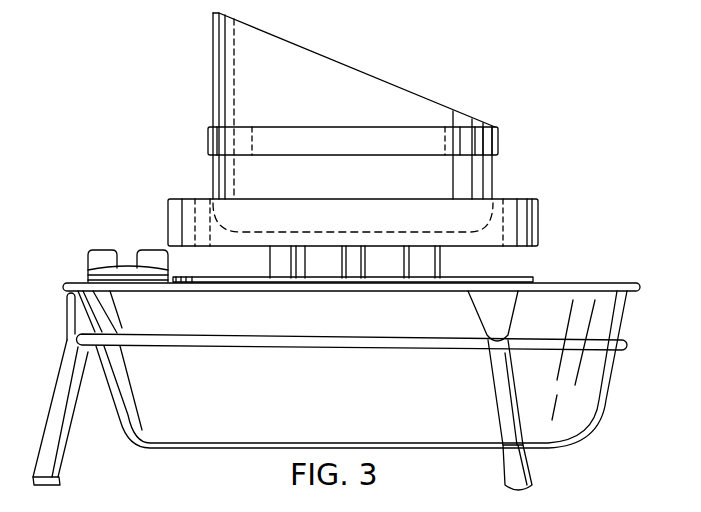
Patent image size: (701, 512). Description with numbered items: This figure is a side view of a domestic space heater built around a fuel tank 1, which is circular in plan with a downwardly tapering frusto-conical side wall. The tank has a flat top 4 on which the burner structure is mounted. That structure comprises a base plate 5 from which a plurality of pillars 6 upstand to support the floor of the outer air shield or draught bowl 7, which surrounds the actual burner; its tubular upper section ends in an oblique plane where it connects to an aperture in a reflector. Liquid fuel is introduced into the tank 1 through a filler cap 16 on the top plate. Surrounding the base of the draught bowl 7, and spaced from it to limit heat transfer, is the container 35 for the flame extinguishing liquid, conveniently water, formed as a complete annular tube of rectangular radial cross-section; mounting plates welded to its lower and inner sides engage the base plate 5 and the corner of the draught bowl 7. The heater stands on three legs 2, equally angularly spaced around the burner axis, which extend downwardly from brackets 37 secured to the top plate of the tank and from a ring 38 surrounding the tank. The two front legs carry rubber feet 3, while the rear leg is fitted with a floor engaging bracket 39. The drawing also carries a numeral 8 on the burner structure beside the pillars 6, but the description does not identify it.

The fuel tank 1 is at (147, 440).
The legs 2 is at (62, 421).
The rubber feet 3 is at (522, 462).
The flat top 4 is at (229, 286).
The base plate 5 is at (177, 281).
The pillars 6 is at (303, 263).
The outer air shield or draught bowl 7 is at (228, 175).
The support post 8 is at (273, 257).
The filler cap 16 is at (131, 267).
The container 35 is at (183, 214).
The brackets 37 is at (493, 303).
The ring 38 is at (262, 345).
The floor engaging bracket 39 is at (55, 481).